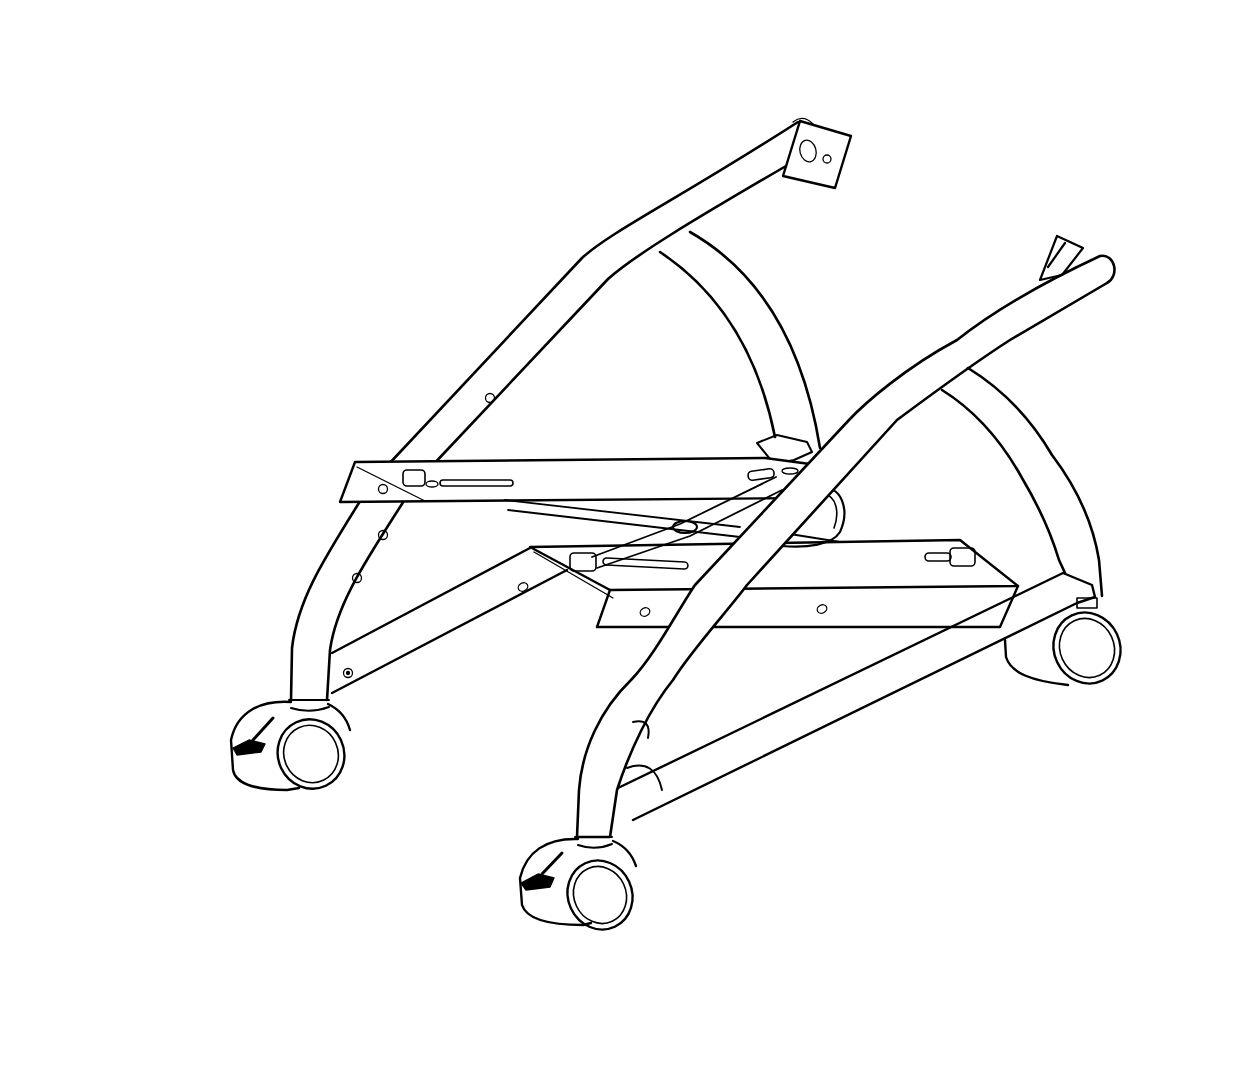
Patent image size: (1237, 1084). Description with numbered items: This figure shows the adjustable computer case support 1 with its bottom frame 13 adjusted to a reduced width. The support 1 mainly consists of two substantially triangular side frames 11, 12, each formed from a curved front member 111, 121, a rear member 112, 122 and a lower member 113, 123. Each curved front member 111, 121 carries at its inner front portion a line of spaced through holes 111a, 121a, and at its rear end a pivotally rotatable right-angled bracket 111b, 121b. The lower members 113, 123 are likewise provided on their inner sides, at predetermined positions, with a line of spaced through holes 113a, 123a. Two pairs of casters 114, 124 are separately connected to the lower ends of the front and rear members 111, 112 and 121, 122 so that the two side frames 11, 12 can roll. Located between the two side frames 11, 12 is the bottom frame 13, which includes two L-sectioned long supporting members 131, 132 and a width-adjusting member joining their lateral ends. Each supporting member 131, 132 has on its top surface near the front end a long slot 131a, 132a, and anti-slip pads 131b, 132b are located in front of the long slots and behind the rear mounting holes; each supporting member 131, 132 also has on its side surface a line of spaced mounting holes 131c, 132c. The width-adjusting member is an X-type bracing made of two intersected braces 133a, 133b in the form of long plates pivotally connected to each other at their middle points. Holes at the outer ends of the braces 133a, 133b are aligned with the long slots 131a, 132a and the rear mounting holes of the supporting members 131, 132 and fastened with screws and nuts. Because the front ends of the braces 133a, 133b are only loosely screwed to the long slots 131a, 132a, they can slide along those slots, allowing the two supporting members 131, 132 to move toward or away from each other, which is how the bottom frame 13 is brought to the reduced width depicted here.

The adjustable computer case support 1 is at (1004, 143).
The side frame 11 is at (520, 250).
The curved front member 111 is at (606, 265).
The through holes 111a is at (378, 537).
The right-angled bracket 111b is at (835, 145).
The rear member 112 is at (758, 335).
The lower member 113 is at (460, 605).
The through holes 113a is at (349, 676).
The casters 114 is at (316, 755).
The side frame 12 is at (1112, 486).
The curved front member 121 is at (869, 430).
The through holes 121a is at (645, 735).
The right-angled bracket 121b is at (1063, 250).
The rear member 122 is at (1025, 433).
The lower member 123 is at (915, 660).
The through holes 123a is at (650, 768).
The casters 124 is at (605, 889).
The bottom frame 13 is at (686, 520).
The supporting member 131 is at (604, 482).
The long slot 131a is at (500, 480).
The anti-slip pads 131b is at (406, 466).
The mounting holes 131c is at (385, 488).
The supporting member 132 is at (875, 567).
The long slot 132a is at (574, 630).
The anti-slip pads 132b is at (577, 570).
The mounting holes 132c is at (648, 612).
The brace 133a is at (560, 520).
The brace 133b is at (663, 539).